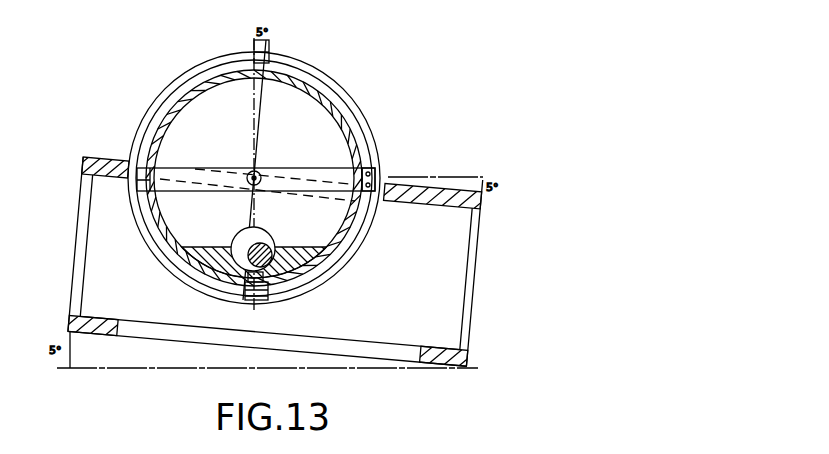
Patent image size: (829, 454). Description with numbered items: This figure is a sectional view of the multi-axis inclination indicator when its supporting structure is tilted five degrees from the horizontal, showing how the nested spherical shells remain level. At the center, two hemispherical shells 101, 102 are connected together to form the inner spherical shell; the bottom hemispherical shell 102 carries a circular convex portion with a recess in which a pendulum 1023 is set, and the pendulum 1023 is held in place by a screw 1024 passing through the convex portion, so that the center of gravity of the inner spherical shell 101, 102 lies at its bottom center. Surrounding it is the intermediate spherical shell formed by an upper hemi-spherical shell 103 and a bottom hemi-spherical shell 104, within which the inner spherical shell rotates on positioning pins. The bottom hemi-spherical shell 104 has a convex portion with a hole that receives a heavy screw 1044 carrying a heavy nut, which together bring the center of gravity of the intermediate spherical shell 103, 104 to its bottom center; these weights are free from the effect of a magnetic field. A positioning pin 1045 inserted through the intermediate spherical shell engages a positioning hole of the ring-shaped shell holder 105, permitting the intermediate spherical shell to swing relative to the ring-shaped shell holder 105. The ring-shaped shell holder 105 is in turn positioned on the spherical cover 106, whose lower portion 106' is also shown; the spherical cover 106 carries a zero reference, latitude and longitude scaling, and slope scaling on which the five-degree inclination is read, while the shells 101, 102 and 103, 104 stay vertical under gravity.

The upper hemispherical shell 101 is at (153, 143).
The bottom hemispherical shell 102 is at (165, 265).
The upper hemi-spherical shell 103 is at (165, 110).
The bottom hemi-spherical shell 104 is at (157, 238).
The ring-shaped shell holder 105 is at (193, 182).
The spherical cover 106 is at (284, 115).
The housing ring lower half 106' is at (285, 241).
The pendulum 1023 is at (276, 233).
The screw 1024 is at (243, 295).
The heavy screw 1044 is at (267, 292).
The positioning pin 1045 is at (380, 163).